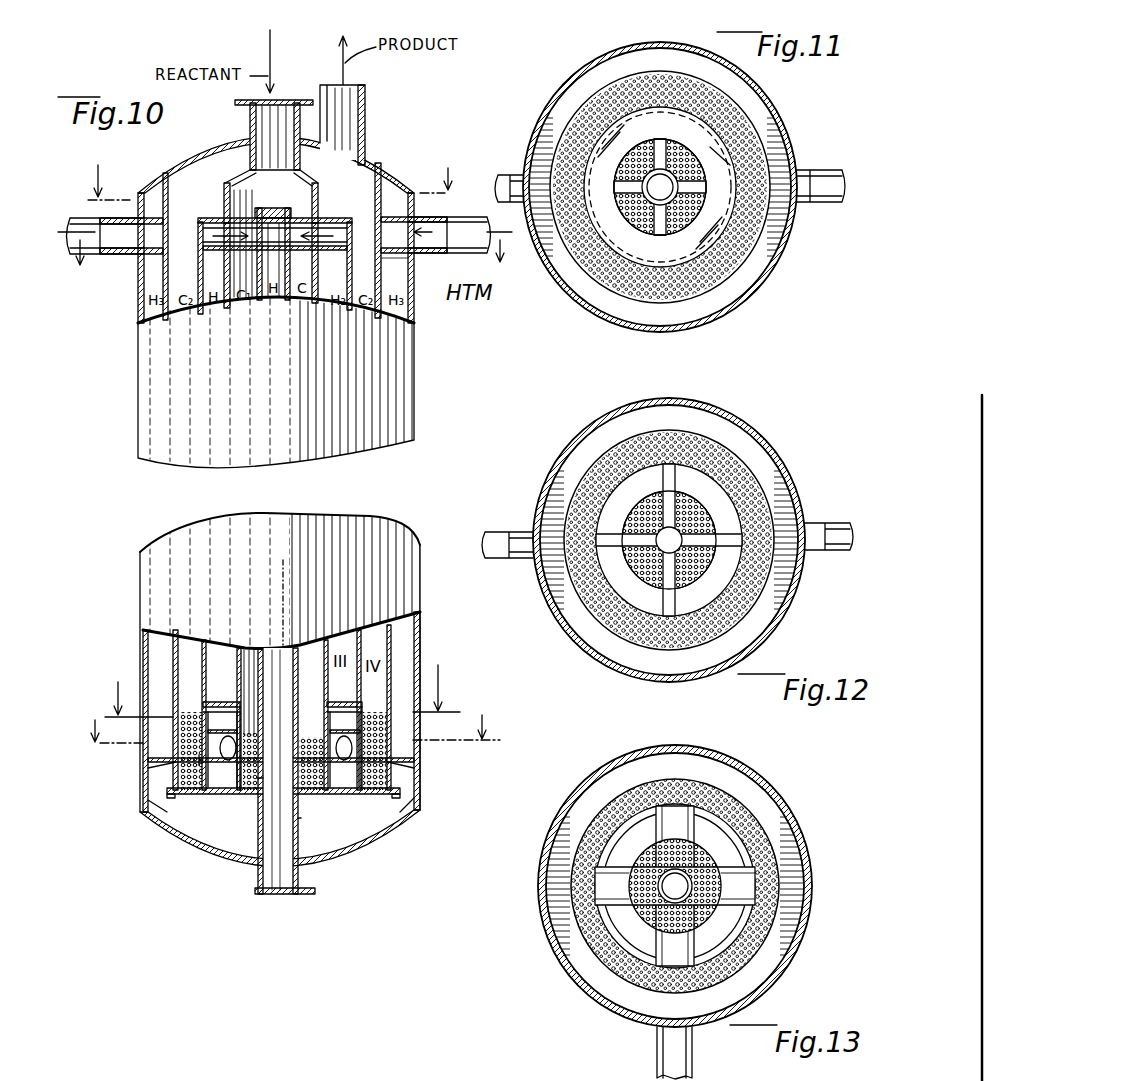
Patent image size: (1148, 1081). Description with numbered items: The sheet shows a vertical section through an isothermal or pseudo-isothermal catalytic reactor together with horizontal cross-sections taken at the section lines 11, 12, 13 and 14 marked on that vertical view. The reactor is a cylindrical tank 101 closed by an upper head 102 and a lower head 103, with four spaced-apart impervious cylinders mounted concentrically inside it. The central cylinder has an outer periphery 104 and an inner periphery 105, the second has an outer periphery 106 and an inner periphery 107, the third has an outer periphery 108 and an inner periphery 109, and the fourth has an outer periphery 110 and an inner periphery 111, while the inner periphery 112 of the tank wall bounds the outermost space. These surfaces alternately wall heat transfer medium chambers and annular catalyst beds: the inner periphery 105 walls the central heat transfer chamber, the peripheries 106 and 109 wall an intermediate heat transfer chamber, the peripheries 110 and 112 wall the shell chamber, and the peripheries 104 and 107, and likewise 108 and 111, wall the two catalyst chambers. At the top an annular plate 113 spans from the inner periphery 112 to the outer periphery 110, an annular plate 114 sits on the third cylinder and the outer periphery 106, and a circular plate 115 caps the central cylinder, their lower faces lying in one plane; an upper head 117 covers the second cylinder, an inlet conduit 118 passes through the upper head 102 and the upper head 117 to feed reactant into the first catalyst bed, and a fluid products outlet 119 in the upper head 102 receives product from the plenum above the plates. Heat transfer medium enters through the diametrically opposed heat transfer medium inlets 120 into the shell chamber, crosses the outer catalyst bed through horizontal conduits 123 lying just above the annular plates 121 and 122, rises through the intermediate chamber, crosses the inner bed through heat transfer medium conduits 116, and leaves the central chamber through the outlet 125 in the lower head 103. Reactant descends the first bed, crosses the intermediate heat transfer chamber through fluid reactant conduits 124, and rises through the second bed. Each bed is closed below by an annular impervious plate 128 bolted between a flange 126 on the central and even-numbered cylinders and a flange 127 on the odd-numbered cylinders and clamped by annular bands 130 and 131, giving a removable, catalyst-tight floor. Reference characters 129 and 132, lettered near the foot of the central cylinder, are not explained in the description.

In FIG. 10, the cylindrical tank 101 is at (415, 311).
In FIG. 13, the cylindrical tank 101 is at (657, 912).
In FIG. 10, the upper head 102 is at (402, 168).
In FIG. 10, the lower head 103 is at (375, 853).
In FIG. 10, the outer periphery of first central cylinder 104 is at (255, 652).
In FIG. 10, the inner periphery of first central cylinder 105 is at (283, 597).
In FIG. 10, the outer periphery of second cylinder 106 is at (328, 645).
In FIG. 10, the inner periphery of second cylinder 107 is at (325, 668).
In FIG. 10, the outer periphery of third cylinder 108 is at (357, 240).
In FIG. 10, the inner periphery of third cylinder 109 is at (352, 263).
In FIG. 10, the outer periphery of fourth cylinder 110 is at (384, 264).
In FIG. 10, the inner periphery of fourth cylinder 111 is at (402, 320).
In FIG. 10, the inner periphery of cylindrical tank 112 is at (418, 642).
In FIG. 10, the annular plate 113 is at (397, 212).
In FIG. 11, the annular plate 113 is at (660, 187).
In FIG. 10, the annular plate 114 is at (350, 218).
In FIG. 11, the annular plate 114 is at (693, 187).
In FIG. 10, the circular plate 115 is at (268, 208).
In FIG. 10, the heat transfer medium conduits 116 is at (226, 200).
In FIG. 11, the heat transfer medium conduits 116 is at (660, 196).
In FIG. 12, the heat transfer medium conduits 116 is at (669, 540).
In FIG. 10, the upper head of second cylinder 117 is at (236, 195).
In FIG. 10, the inlet conduit 118 is at (250, 121).
In FIG. 10, the fluid products outlet 119 is at (366, 107).
In FIG. 10, the heat transfer medium inlet 120 is at (108, 258).
In FIG. 11, the heat transfer medium inlet 120 is at (670, 187).
In FIG. 12, the heat transfer medium inlet 120 is at (667, 524).
In FIG. 10, the annular plate 121 is at (415, 771).
In FIG. 10, the annular plate 122 is at (226, 794).
In FIG. 10, the conduits 123 is at (178, 762).
In FIG. 10, the fluid reactant conduits 124 is at (206, 702).
In FIG. 12, the fluid reactant conduits 124 is at (669, 540).
In FIG. 13, the fluid reactant conduits 124 is at (667, 882).
In FIG. 10, the outlet 125 is at (298, 894).
In FIG. 10, the flange 126 is at (401, 797).
In FIG. 10, the flange 127 is at (345, 794).
In FIG. 10, the annular impervious plate 128 is at (368, 794).
In FIG. 10, the opening 129 is at (265, 779).
In FIG. 10, the annular band 130 is at (165, 812).
In FIG. 10, the annular band 131 is at (205, 794).
In FIG. 10, the port 132 is at (295, 824).
In FIG. 10, the section line 11— 11 is at (272, 170).
In FIG. 10, the section line 12— 12 is at (288, 268).
In FIG. 10, the section line 13— 13 is at (282, 704).
In FIG. 10, the section line 14- 14 is at (292, 746).